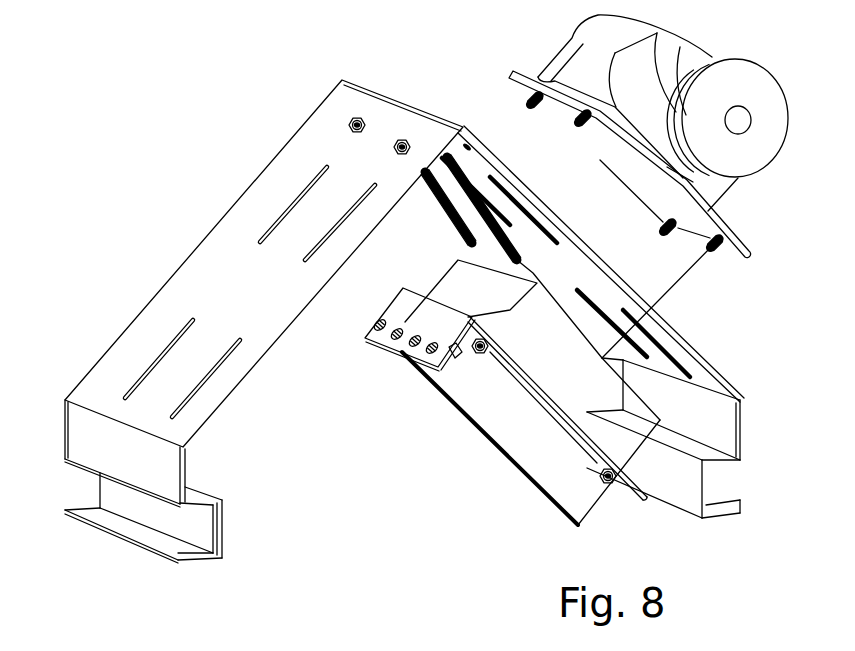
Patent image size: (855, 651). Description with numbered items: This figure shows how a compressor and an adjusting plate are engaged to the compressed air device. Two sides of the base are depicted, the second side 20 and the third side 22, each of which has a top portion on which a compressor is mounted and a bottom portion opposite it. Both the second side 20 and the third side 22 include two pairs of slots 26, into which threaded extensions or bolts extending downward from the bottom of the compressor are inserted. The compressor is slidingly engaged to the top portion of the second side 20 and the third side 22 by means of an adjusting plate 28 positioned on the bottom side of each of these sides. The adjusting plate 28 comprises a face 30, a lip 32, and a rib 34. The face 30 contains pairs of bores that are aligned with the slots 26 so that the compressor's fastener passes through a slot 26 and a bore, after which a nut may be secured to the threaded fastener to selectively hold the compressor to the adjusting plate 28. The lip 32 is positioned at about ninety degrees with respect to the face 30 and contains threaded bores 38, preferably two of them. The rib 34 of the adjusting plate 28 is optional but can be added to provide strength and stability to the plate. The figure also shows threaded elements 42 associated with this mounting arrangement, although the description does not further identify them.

The second side 20 is at (187, 292).
The third side 22 is at (712, 388).
The slots 26 is at (272, 227).
The adjusting plate 28 is at (478, 479).
The face 30 is at (565, 415).
The lip 32 is at (403, 343).
The rib 34 is at (483, 397).
The threaded bores 38 is at (367, 329).
The threaded rods 42 is at (468, 200).